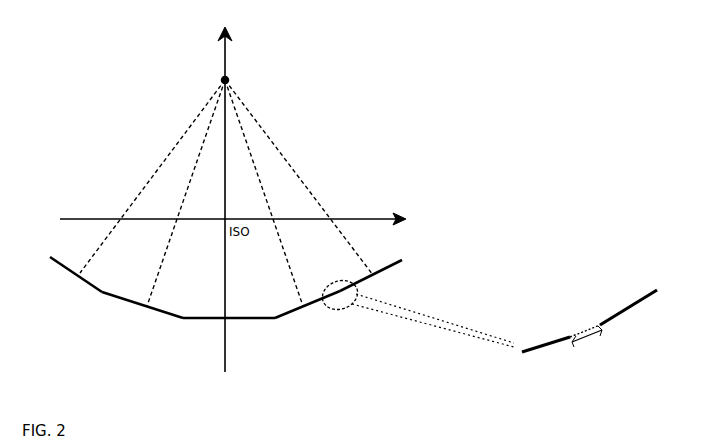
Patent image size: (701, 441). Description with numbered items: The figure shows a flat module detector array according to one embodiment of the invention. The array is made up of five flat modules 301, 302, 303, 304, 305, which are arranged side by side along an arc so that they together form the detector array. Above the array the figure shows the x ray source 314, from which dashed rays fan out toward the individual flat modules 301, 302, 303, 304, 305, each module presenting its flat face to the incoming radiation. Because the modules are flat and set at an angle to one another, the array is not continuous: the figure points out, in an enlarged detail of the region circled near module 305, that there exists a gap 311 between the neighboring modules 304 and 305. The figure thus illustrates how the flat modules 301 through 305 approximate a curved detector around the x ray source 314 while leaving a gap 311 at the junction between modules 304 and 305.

The flat module 301 is at (80, 276).
The flat module 302 is at (135, 303).
The flat module 303 is at (212, 320).
The flat module 304 is at (299, 309).
The flat module 305 is at (372, 280).
The gap 311 is at (592, 334).
The x ray source 314 is at (240, 79).